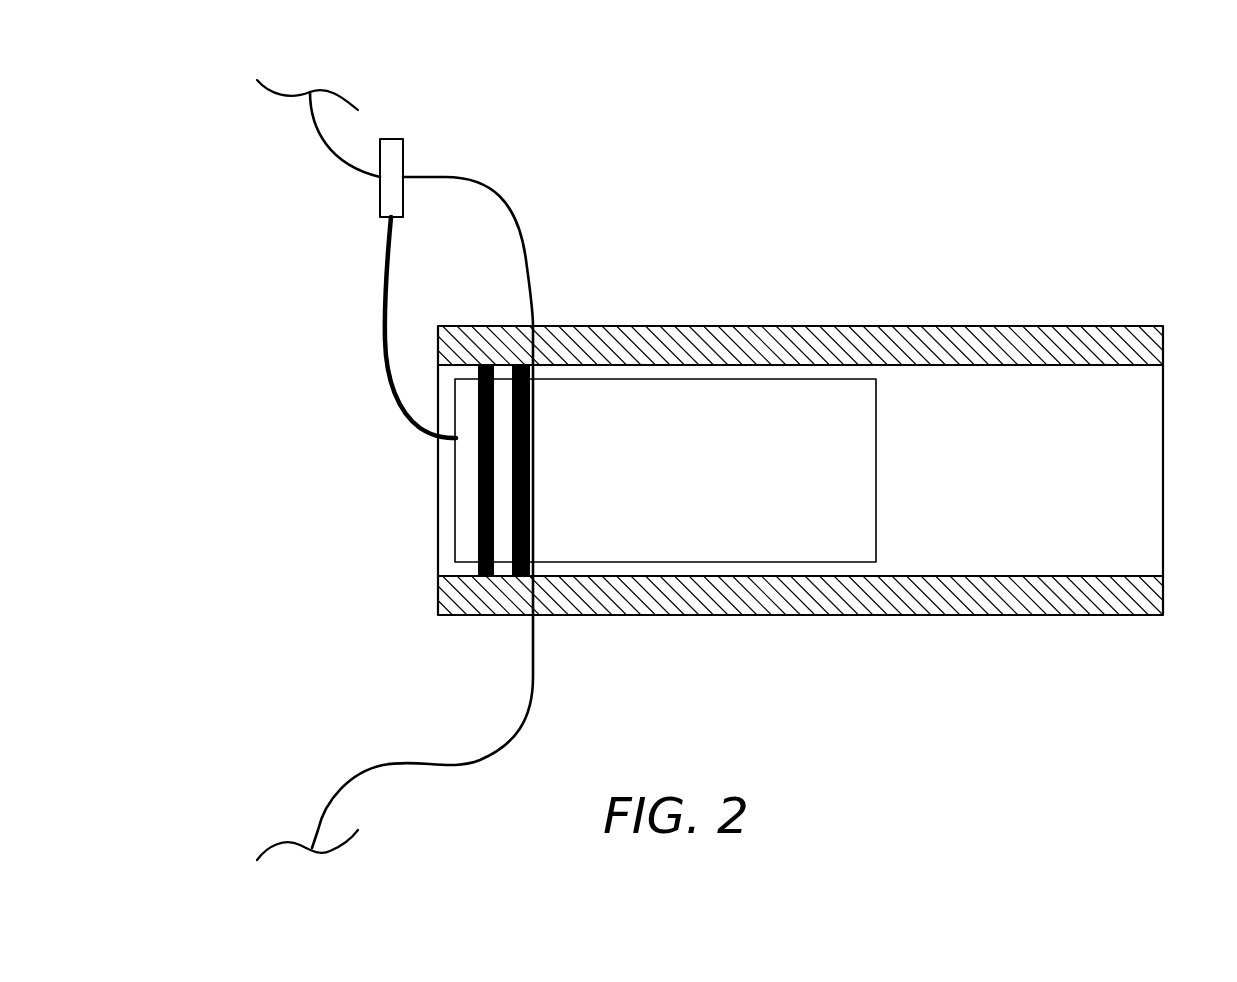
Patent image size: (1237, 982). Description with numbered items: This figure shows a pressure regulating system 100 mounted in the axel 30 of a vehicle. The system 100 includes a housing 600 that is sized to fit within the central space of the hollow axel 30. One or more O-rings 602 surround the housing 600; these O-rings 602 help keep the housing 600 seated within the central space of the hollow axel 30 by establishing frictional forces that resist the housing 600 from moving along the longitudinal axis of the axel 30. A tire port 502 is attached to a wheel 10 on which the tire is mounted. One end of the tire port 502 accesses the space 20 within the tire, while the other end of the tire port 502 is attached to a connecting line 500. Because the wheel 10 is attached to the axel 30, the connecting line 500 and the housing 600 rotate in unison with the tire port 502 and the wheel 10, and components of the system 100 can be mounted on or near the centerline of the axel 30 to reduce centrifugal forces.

The wheel 10 is at (313, 128).
The space within the tire 20 is at (338, 162).
The axel 30 is at (992, 343).
The system 100 is at (800, 311).
The connecting line 500 is at (383, 307).
The tire port 502 is at (383, 197).
The housing 600 is at (757, 415).
The O-rings 602 is at (530, 518).